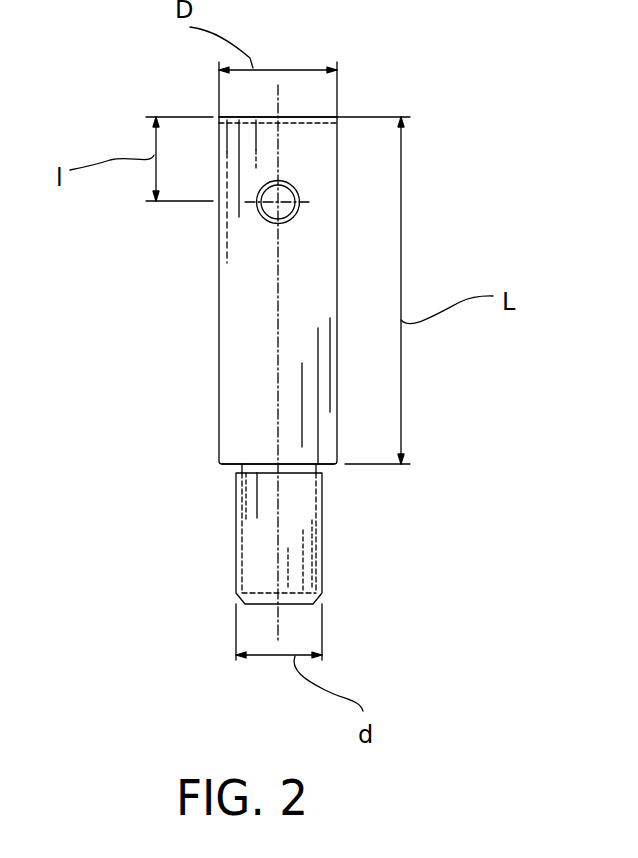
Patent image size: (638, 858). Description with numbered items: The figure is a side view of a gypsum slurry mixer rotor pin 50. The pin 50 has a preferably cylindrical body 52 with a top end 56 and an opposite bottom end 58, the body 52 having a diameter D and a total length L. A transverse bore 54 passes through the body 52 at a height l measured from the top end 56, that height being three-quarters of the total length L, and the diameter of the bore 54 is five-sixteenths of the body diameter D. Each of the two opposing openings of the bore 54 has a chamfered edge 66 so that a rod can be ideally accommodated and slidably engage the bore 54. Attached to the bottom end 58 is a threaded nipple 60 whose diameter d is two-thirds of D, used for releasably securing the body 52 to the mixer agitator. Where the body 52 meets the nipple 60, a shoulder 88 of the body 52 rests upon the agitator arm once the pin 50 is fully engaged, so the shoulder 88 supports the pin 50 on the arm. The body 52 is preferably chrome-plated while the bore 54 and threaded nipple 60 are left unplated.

The gypsum mixer rotor pin 50 is at (143, 105).
The body 52 is at (337, 153).
The transverse bore 54 is at (270, 210).
The top end 56 is at (318, 113).
The bottom end 58 is at (334, 470).
The threaded nipple 60 is at (288, 553).
The chamfered edge 66 is at (290, 179).
The shoulder 88 is at (230, 466).